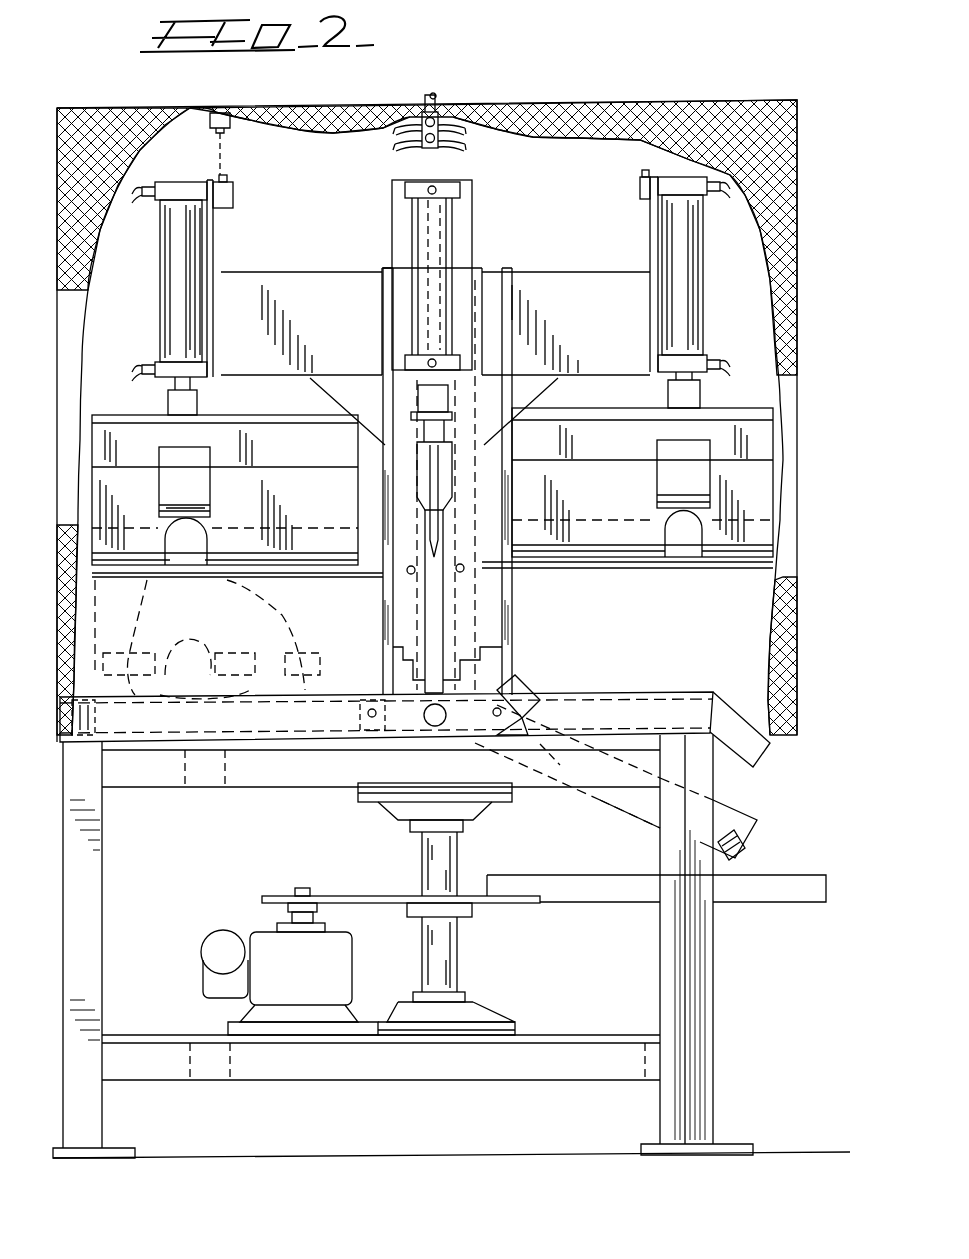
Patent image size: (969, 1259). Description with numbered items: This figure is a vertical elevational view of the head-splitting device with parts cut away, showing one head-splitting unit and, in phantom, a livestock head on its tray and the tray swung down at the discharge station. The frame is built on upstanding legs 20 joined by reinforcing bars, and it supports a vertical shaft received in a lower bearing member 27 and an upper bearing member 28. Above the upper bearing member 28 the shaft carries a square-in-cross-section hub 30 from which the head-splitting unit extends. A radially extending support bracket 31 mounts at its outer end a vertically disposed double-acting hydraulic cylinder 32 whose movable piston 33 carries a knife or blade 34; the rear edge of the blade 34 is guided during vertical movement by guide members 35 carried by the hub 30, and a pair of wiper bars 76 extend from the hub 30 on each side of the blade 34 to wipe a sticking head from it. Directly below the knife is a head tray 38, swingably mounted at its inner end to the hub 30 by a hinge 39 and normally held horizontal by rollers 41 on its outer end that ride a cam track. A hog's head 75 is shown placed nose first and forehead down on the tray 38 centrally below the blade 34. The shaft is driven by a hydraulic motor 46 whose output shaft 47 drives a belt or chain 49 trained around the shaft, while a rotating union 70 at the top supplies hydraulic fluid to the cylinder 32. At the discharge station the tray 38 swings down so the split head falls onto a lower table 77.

The upstanding legs 20 is at (102, 932).
The lower bearing member 27 is at (490, 1010).
The upper bearing member 28 is at (487, 805).
The hub 30 is at (472, 222).
The support bracket 31 is at (305, 290).
The double-acting hydraulic cylinder 32 is at (170, 250).
The piston 33 is at (168, 390).
The knife or blade 34 is at (142, 504).
The guide members 35 is at (365, 486).
The head tray 38 is at (735, 808).
The hinge 39 is at (503, 708).
The rollers 41 is at (733, 866).
The hydraulic motor 46 is at (332, 957).
The output shaft 47 is at (300, 888).
The belt or chain 49 is at (355, 896).
The rotating union 70 is at (440, 115).
The hog's head 75 is at (280, 618).
The wiper bars 76 is at (464, 566).
The lower table 77 is at (770, 906).